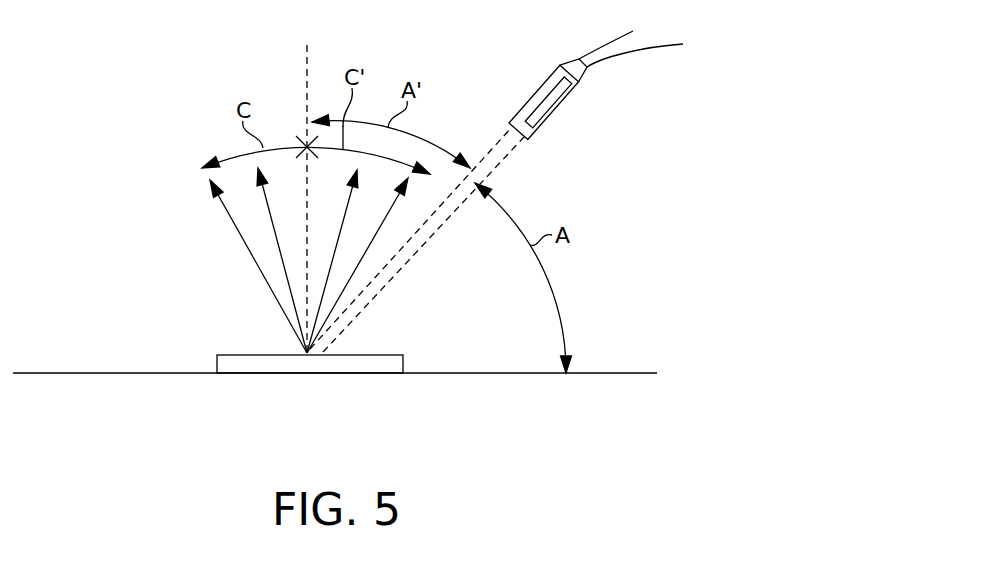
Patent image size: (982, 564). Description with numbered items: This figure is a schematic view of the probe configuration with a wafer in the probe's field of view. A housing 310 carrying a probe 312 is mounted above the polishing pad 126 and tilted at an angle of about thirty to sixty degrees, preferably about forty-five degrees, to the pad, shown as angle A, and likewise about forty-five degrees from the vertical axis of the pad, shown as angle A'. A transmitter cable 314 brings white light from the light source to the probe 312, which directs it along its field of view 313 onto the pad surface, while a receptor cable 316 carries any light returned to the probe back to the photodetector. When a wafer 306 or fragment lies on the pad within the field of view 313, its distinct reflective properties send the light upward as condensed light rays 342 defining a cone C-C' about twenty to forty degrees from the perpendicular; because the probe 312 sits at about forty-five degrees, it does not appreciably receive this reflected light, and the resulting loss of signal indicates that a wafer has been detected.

The polishing pad 126 is at (595, 374).
The wafer 306 is at (233, 354).
The light rays 342 is at (272, 220).
The field of view 313 is at (480, 163).
The housing 310 is at (538, 128).
The probe 312 is at (553, 93).
The transmitter cable 314 is at (595, 52).
The receptor cable 316 is at (622, 53).